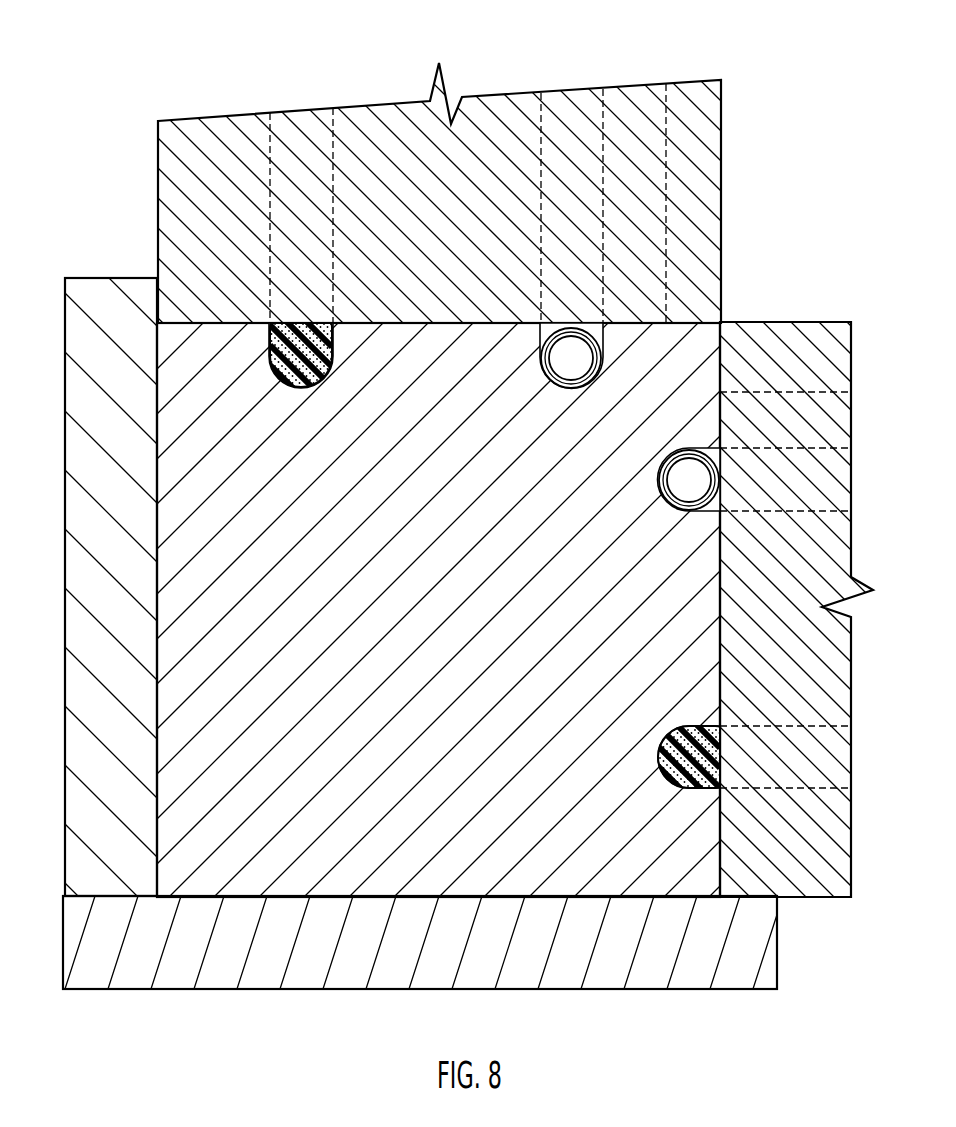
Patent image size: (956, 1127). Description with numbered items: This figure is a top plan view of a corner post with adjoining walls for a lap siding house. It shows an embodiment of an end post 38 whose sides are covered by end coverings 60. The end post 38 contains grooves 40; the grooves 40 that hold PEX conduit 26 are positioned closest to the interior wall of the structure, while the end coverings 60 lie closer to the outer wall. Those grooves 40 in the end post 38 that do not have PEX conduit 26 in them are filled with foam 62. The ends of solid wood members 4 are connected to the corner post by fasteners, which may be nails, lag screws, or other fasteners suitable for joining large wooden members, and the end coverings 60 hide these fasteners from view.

The solid wood member 4 is at (500, 106).
The PEX conduit 26 is at (565, 390).
The end post 38 is at (460, 583).
The groove 40 is at (687, 448).
The end covering 60 is at (83, 578).
The foam 62 is at (302, 392).